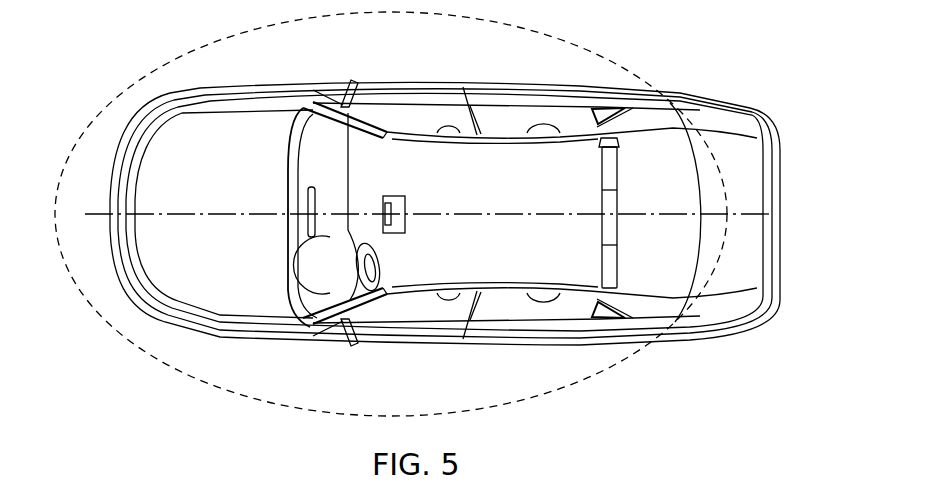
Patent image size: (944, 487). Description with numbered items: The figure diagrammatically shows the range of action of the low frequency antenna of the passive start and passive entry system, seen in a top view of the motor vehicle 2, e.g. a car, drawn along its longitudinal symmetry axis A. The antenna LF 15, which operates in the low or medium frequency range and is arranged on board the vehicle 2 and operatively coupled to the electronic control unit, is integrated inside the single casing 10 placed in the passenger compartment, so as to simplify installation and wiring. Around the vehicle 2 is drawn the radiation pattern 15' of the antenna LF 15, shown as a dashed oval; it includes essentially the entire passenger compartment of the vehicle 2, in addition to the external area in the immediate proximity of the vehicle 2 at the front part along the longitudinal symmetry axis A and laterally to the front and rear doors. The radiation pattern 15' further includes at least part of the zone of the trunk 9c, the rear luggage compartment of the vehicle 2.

The motor vehicle 2 is at (285, 341).
The trunk 9c is at (741, 270).
The single casing 10 is at (404, 224).
The antenna LF 15 is at (407, 196).
The radiation pattern 15' is at (391, 214).
The longitudinal symmetry axis A is at (95, 214).